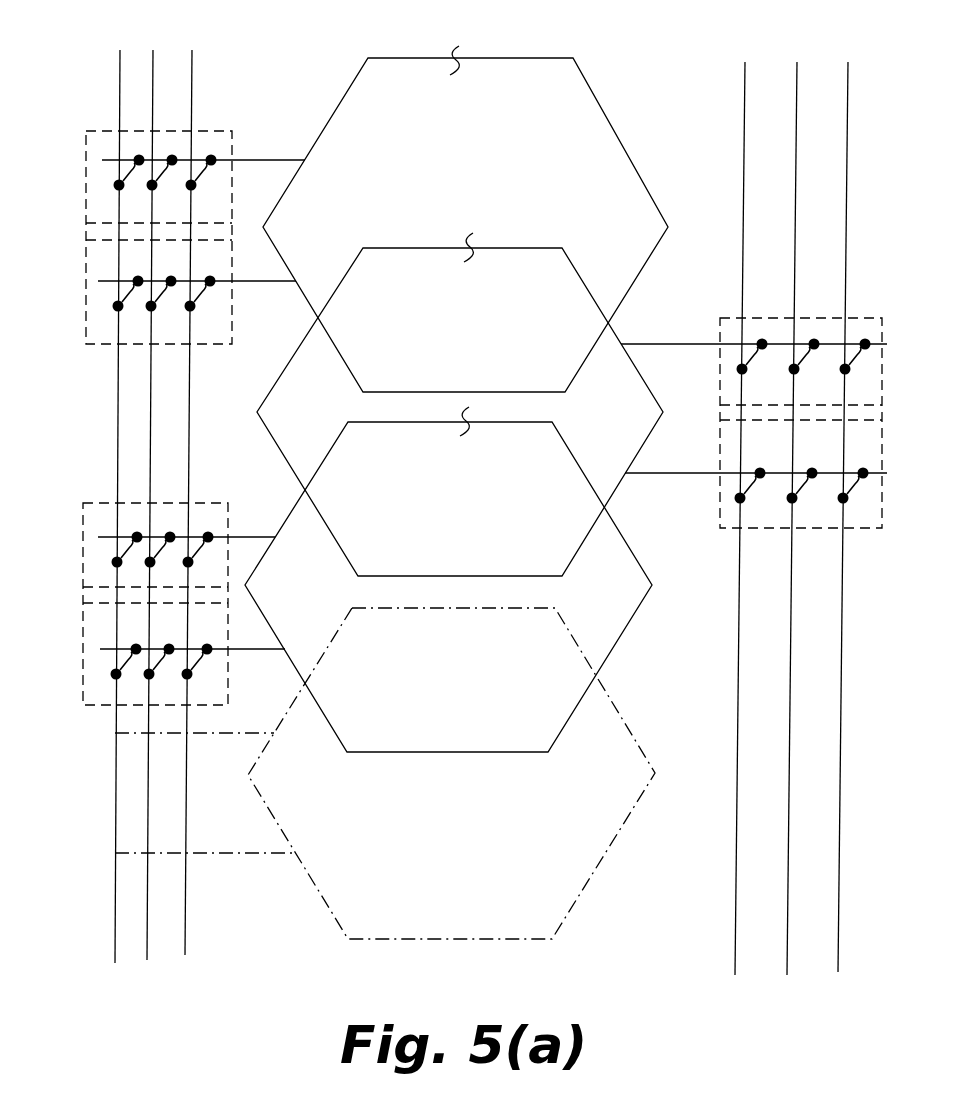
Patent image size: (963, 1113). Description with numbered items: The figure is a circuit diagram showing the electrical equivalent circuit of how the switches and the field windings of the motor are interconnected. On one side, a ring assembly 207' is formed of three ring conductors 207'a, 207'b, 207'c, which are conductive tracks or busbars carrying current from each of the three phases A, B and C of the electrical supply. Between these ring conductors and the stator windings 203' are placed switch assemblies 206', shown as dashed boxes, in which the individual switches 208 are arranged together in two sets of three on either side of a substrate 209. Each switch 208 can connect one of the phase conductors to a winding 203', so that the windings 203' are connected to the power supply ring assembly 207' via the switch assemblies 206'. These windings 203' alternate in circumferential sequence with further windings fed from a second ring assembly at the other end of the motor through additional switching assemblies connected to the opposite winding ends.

The stator windings 203' is at (456, 389).
The switch assemblies 206' is at (194, 418).
The ring assembly 207' is at (191, 63).
The ring conductor 207'a is at (91, 538).
The ring conductor 207'b is at (164, 554).
The ring conductor 207'c is at (209, 527).
The switches 208 is at (207, 296).
The substrate 209 is at (92, 236).